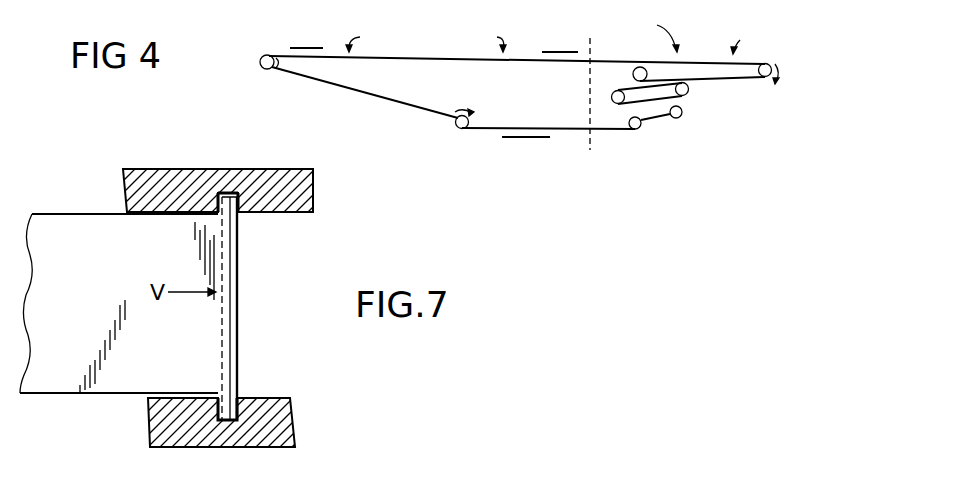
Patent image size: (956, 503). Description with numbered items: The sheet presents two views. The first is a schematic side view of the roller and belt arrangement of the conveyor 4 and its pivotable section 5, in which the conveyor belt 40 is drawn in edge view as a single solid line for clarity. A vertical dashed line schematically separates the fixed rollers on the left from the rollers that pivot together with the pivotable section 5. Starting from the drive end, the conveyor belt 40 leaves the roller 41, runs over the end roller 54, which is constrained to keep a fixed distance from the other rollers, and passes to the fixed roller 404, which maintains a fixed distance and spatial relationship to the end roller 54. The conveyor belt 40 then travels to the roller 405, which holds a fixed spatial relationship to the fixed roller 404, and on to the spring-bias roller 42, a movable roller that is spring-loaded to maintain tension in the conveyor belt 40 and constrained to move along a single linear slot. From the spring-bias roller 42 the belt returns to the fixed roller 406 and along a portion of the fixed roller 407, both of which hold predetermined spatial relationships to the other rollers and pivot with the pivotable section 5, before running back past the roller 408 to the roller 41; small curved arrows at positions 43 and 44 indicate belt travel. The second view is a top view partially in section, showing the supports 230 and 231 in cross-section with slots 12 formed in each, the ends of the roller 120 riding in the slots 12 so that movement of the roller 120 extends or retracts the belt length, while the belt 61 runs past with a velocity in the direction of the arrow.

In FIG. 4, the conveyor 4 is at (361, 37).
In FIG. 4, the pivotable section 5 is at (743, 36).
In FIG. 4, the conveyor belt 40 is at (441, 56).
In FIG. 4, the drive pulley 41 is at (266, 54).
In FIG. 4, the spring-bias roller 42 is at (611, 97).
In FIG. 4, the belt run 43 is at (488, 37).
In FIG. 4, the belt run 44 is at (652, 31).
In FIG. 4, the end roller 54 is at (770, 62).
In FIG. 4, the fixed roller 404 is at (647, 65).
In FIG. 4, the roller 405 is at (689, 92).
In FIG. 4, the fixed roller 406 is at (681, 115).
In FIG. 4, the fixed roller 407 is at (636, 130).
In FIG. 4, the pulley 408 is at (466, 130).
In FIG. 7, the slot 12 is at (221, 198).
In FIG. 7, the plate 61 is at (119, 303).
In FIG. 7, the roller 120 is at (240, 212).
In FIG. 7, the support 230 is at (170, 418).
In FIG. 7, the support 231 is at (158, 178).